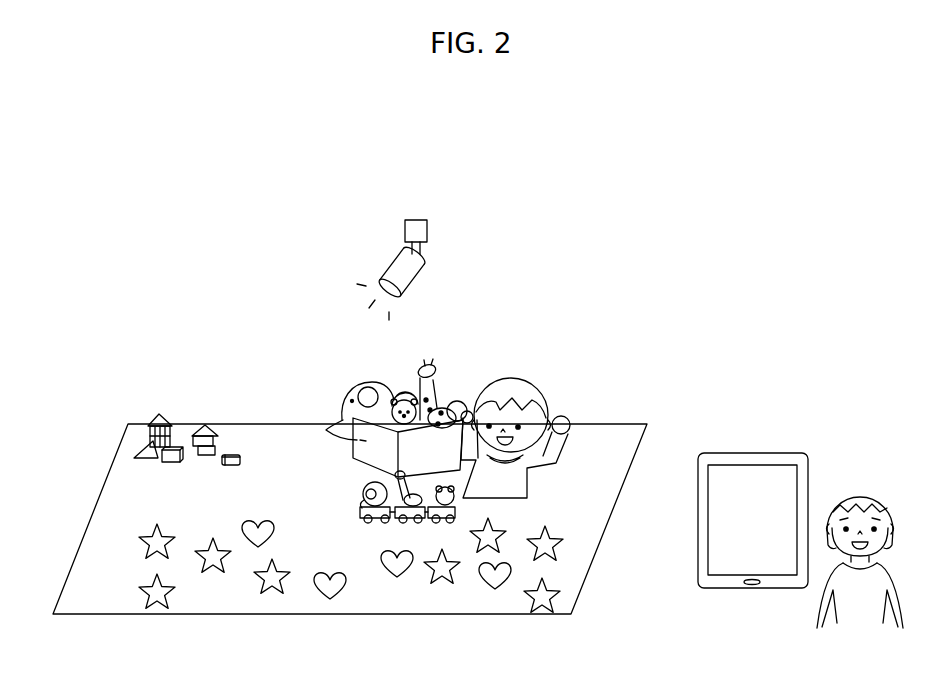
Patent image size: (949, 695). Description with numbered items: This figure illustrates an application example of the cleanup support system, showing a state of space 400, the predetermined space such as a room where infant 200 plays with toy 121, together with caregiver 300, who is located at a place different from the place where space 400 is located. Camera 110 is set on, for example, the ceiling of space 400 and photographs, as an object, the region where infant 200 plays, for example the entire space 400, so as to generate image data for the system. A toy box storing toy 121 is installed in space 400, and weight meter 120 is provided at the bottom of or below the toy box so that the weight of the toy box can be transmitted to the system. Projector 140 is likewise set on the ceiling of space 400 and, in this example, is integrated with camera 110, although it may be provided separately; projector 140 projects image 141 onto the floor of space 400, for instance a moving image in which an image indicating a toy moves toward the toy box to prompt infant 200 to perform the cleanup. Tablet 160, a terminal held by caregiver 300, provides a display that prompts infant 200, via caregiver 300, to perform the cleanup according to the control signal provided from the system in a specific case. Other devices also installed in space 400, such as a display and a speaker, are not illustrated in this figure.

The camera 110 is at (451, 270).
The projector 140 is at (425, 262).
The weight meter 120 is at (347, 438).
The toy 121 is at (153, 414).
The image 141 is at (548, 531).
The tablet 160 is at (760, 455).
The infant 200 is at (540, 380).
The caregiver 300 is at (875, 476).
The space 400 is at (663, 233).